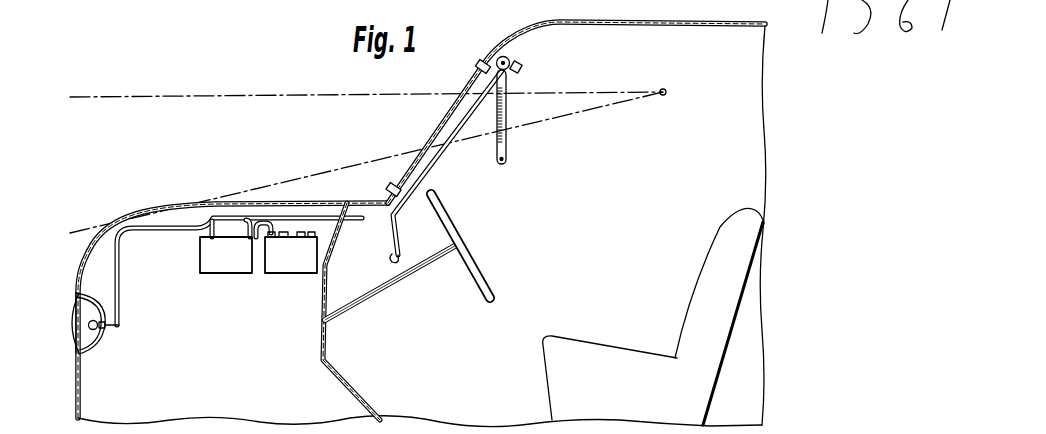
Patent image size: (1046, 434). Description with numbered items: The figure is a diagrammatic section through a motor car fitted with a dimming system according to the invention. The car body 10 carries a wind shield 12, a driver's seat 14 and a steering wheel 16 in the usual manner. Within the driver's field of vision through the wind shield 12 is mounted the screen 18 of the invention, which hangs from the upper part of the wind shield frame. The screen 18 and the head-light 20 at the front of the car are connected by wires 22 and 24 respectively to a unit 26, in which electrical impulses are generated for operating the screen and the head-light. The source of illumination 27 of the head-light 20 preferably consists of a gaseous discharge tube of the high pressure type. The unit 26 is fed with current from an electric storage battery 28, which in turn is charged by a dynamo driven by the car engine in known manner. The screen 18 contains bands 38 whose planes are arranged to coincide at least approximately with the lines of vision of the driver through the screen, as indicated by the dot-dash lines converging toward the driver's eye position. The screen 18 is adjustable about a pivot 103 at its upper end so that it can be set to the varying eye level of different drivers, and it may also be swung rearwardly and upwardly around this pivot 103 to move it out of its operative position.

The car body 10 is at (251, 202).
The wind shield 12 is at (420, 151).
The driver's seat 14 is at (700, 294).
The steering wheel 16 is at (483, 278).
The screen 18 is at (524, 113).
The head-light 20 is at (103, 302).
The wire 22 is at (440, 162).
The wire 24 is at (190, 216).
The unit 26 is at (237, 263).
The source of illumination 27 is at (103, 332).
The electric storage battery 28 is at (293, 263).
The bands 38 is at (507, 112).
The pivot 103 is at (510, 60).